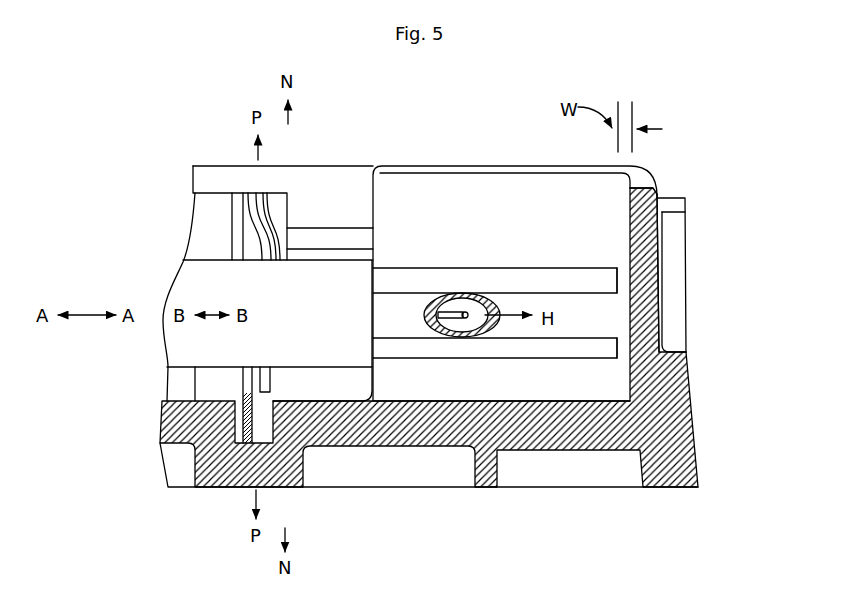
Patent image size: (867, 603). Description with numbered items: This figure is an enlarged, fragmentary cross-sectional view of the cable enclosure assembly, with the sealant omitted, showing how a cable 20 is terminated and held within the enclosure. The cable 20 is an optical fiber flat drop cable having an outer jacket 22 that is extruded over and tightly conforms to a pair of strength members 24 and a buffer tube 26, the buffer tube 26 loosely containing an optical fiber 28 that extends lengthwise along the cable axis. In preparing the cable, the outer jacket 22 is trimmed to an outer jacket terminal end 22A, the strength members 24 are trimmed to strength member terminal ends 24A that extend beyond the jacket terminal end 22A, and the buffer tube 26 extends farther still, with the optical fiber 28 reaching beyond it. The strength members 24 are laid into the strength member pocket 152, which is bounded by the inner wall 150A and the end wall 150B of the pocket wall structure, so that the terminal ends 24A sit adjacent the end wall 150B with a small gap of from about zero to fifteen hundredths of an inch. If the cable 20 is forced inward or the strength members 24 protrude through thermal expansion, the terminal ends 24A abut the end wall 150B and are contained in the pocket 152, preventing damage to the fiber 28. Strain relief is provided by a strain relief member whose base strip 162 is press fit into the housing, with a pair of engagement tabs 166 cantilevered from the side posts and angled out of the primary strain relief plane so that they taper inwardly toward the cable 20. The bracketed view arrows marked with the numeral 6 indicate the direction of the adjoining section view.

The section line of FIG. 6 is at (227, 125).
The cable 20 is at (307, 246).
The outer jacket 22 is at (212, 282).
The outer jacket terminal end 22A is at (380, 280).
The strength member 24 is at (410, 278).
The strength member terminal end 24A is at (617, 268).
The buffer tube 26 is at (378, 323).
The optical fiber 28 is at (475, 337).
The inner wall 150A is at (430, 166).
The end wall 150B is at (658, 195).
The strength member pocket 152 is at (512, 218).
The base strip 162 is at (242, 425).
The engagement tab 166 is at (250, 222).